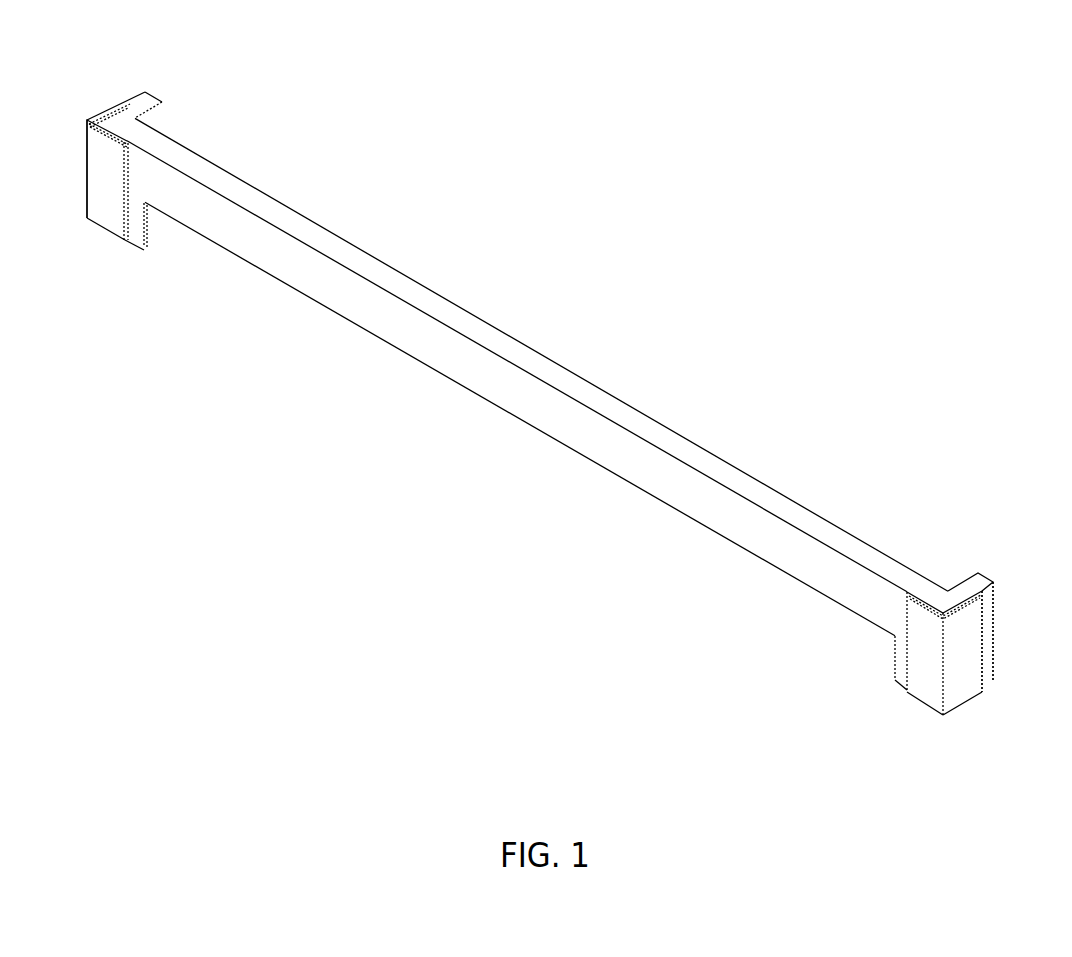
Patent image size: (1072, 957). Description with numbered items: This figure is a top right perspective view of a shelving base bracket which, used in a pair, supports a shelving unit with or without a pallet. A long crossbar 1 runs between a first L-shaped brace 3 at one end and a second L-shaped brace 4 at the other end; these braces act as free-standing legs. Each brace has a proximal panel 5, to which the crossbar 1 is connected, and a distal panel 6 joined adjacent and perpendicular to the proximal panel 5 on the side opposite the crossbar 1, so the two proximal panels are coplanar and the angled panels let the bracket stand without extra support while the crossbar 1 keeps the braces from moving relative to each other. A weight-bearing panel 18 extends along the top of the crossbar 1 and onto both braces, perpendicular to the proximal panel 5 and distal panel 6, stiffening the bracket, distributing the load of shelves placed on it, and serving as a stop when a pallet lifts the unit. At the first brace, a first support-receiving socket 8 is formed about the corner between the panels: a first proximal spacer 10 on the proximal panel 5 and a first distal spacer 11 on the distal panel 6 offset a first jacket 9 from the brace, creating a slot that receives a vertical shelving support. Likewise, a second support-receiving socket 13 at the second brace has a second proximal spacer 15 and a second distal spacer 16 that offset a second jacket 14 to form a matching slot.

The crossbar 1 is at (520, 419).
The first L-shaped brace 3 is at (147, 224).
The second L-shaped brace 4 is at (998, 647).
The proximal panel 5 is at (137, 240).
The distal panel 6 is at (150, 118).
The first support-receiving socket 8 is at (84, 163).
The first jacket 9 is at (95, 215).
The first proximal spacer 10 is at (128, 165).
The first distal spacer 11 is at (127, 100).
The second support-receiving socket 13 is at (966, 703).
The second jacket 14 is at (928, 698).
The second proximal spacer 15 is at (912, 592).
The second distal spacer 16 is at (983, 589).
The weight-bearing panel 18 is at (669, 430).